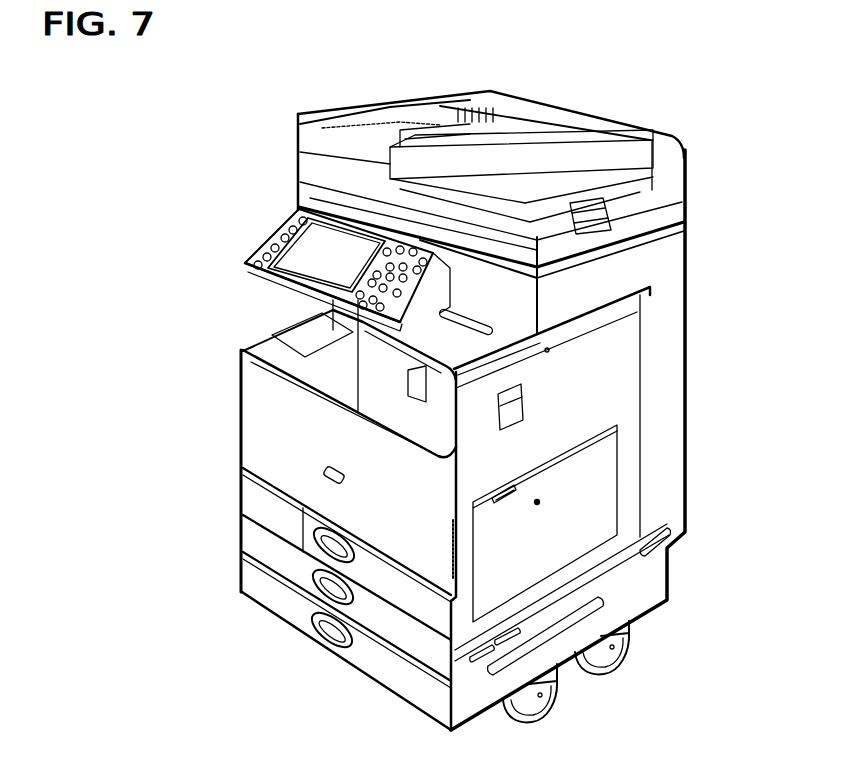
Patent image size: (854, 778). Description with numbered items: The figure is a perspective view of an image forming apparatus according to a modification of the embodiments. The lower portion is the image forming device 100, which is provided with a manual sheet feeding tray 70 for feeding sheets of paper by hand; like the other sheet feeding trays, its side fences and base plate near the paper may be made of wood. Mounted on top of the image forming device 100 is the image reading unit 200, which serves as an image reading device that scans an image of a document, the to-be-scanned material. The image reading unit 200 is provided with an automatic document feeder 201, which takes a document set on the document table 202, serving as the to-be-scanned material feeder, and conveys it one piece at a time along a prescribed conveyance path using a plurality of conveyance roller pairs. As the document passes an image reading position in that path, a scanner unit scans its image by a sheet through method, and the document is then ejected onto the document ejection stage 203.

The image forming device 100 is at (242, 438).
The image reading unit 200 is at (298, 142).
The automatic document feeder 201 is at (466, 92).
The document table 202 is at (522, 150).
The document ejection stage 203 is at (610, 193).
The manual sheet feeding tray 70 is at (537, 502).